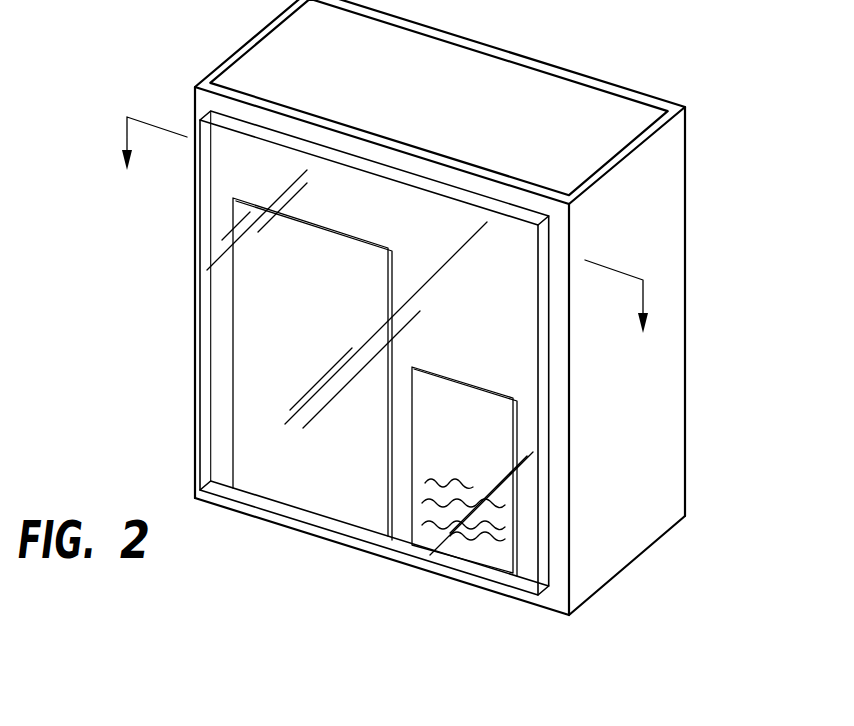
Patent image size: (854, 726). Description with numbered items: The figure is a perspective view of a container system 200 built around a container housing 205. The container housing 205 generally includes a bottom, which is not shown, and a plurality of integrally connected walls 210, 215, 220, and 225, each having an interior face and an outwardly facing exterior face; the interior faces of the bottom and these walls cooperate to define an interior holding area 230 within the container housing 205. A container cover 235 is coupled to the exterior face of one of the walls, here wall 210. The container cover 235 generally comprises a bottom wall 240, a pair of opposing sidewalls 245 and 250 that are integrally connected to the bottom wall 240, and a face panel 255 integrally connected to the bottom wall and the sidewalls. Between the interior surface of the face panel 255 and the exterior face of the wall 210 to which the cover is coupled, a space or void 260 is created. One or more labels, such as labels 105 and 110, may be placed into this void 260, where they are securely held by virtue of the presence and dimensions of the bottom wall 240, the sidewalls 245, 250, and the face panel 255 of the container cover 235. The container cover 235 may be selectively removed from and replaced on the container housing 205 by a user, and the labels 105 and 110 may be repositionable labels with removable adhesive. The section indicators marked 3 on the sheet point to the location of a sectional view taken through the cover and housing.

The container system 200 is at (163, 33).
The container housing 205 is at (660, 180).
The wall 210 is at (553, 600).
The wall 215 is at (655, 517).
The wall 220 is at (482, 110).
The wall 225 is at (288, 83).
The interior holding area 230 is at (568, 127).
The container cover 235 is at (204, 303).
The bottom wall 240 is at (323, 529).
The sidewall 245 is at (204, 118).
The sidewall 250 is at (548, 247).
The face panel 255 is at (490, 313).
The void 260 is at (428, 194).
The label 105 is at (238, 410).
The label 110 is at (482, 544).
The section line for FIG. 3 is at (384, 238).